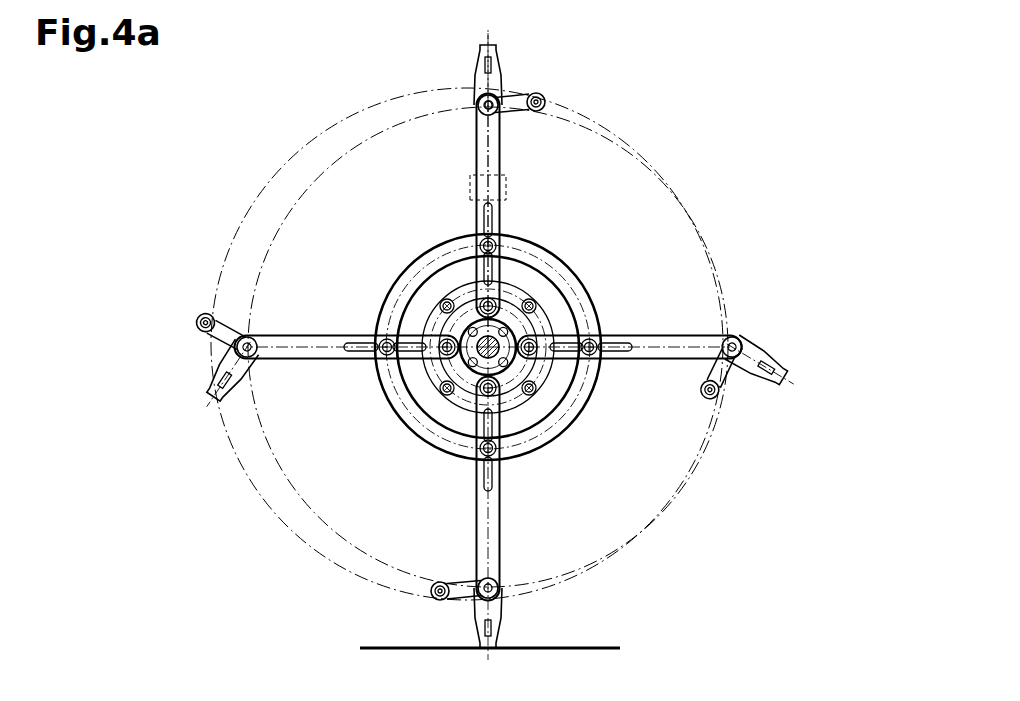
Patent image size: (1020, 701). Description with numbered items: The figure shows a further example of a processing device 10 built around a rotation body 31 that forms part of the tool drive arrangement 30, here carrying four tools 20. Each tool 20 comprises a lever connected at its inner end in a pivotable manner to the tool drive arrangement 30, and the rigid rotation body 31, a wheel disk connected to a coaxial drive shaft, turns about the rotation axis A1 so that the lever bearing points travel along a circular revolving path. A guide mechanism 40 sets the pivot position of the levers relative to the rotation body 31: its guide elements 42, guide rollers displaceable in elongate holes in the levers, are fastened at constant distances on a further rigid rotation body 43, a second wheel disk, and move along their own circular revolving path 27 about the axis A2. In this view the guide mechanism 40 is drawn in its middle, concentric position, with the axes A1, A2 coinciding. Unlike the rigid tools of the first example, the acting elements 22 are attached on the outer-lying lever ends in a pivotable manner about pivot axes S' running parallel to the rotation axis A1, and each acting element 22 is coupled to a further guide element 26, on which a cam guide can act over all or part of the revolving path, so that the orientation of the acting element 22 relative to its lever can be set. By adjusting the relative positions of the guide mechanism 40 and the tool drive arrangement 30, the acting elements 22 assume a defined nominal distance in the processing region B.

The processing device 10 is at (261, 120).
The tool 20 is at (670, 329).
The acting element 22 is at (772, 352).
The further guide element 26 is at (547, 95).
The roller path circle 27 is at (240, 214).
The tool drive arrangement 30 is at (457, 403).
The rotation body 31 is at (536, 373).
The guide mechanism 40 is at (605, 296).
The guide element 42 is at (372, 353).
The rotation body 43 is at (535, 246).
The rotation axis A1 is at (456, 322).
The axis A2 is at (500, 345).
The pivot axis S' is at (439, 79).
The processing region B is at (579, 644).